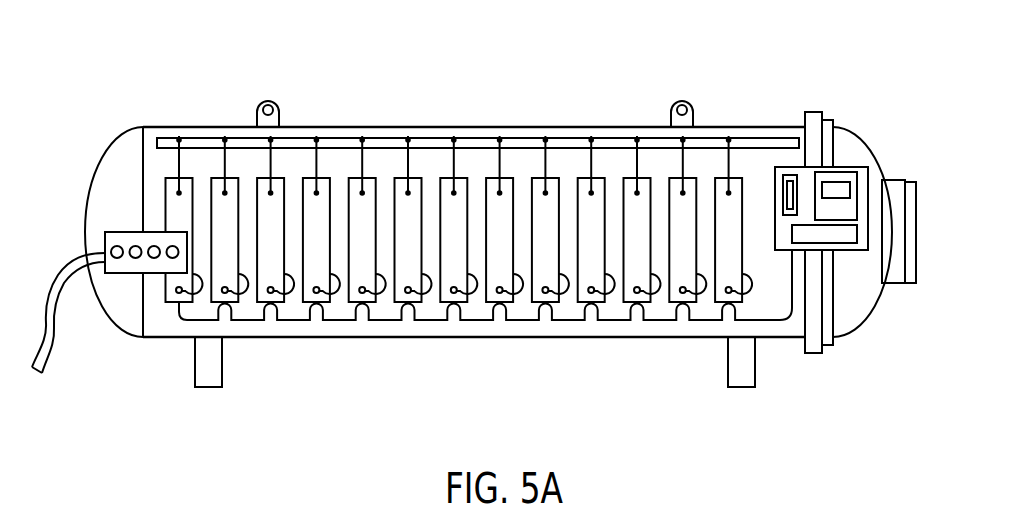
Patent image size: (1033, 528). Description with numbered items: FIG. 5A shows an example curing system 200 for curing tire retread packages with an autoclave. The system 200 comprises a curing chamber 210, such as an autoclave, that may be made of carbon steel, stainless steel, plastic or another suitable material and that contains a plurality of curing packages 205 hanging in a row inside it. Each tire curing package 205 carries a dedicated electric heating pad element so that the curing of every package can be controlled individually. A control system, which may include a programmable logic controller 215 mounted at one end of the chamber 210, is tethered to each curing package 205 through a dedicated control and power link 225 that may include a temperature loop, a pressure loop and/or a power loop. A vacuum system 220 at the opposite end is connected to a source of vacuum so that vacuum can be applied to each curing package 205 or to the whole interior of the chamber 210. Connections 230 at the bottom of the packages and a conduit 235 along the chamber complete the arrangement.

The curing system 200 is at (475, 223).
The curing package 205 is at (585, 185).
The curing chamber 210 is at (107, 310).
The programmable logic controller 215 is at (862, 238).
The vacuum system 220 is at (128, 235).
The control and power link 225 is at (521, 322).
The tube connectors 230 is at (334, 290).
The outlet conduit 235 is at (666, 323).